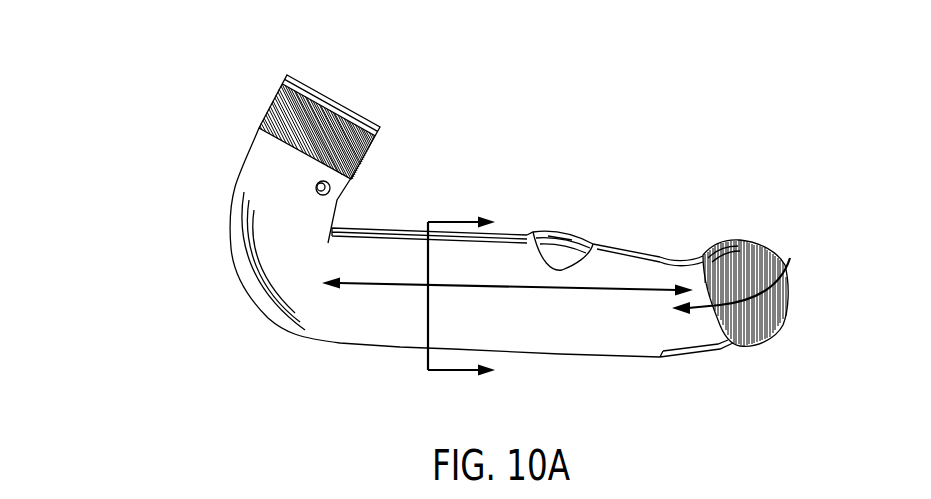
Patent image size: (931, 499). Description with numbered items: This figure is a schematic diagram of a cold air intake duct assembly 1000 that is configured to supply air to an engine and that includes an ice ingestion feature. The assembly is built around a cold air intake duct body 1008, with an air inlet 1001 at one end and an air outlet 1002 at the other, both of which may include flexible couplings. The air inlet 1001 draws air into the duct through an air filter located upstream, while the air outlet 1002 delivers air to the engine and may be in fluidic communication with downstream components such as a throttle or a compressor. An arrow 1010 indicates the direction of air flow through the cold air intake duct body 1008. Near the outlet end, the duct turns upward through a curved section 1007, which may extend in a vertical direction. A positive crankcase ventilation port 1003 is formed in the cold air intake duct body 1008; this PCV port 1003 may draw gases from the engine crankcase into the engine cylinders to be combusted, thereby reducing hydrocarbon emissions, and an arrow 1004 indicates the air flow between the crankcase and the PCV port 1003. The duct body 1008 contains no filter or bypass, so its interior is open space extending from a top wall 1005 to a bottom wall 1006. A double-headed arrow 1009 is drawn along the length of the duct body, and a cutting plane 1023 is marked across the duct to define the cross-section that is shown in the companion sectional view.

The cold air intake duct assembly 1000 is at (250, 58).
The air inlet 1001 is at (767, 208).
The air outlet 1002 is at (403, 123).
The positive crankcase ventilation (PCV) port 1003 is at (617, 237).
The arrow 1004 is at (557, 208).
The top wall 1005 is at (508, 233).
The bottom wall 1006 is at (658, 357).
The curved section 1007 is at (292, 366).
The cold air intake duct body 1008 is at (633, 260).
The longitudinal axis 1009 is at (372, 282).
The arrow 1010 is at (747, 300).
The cutting plane 1023 is at (427, 323).